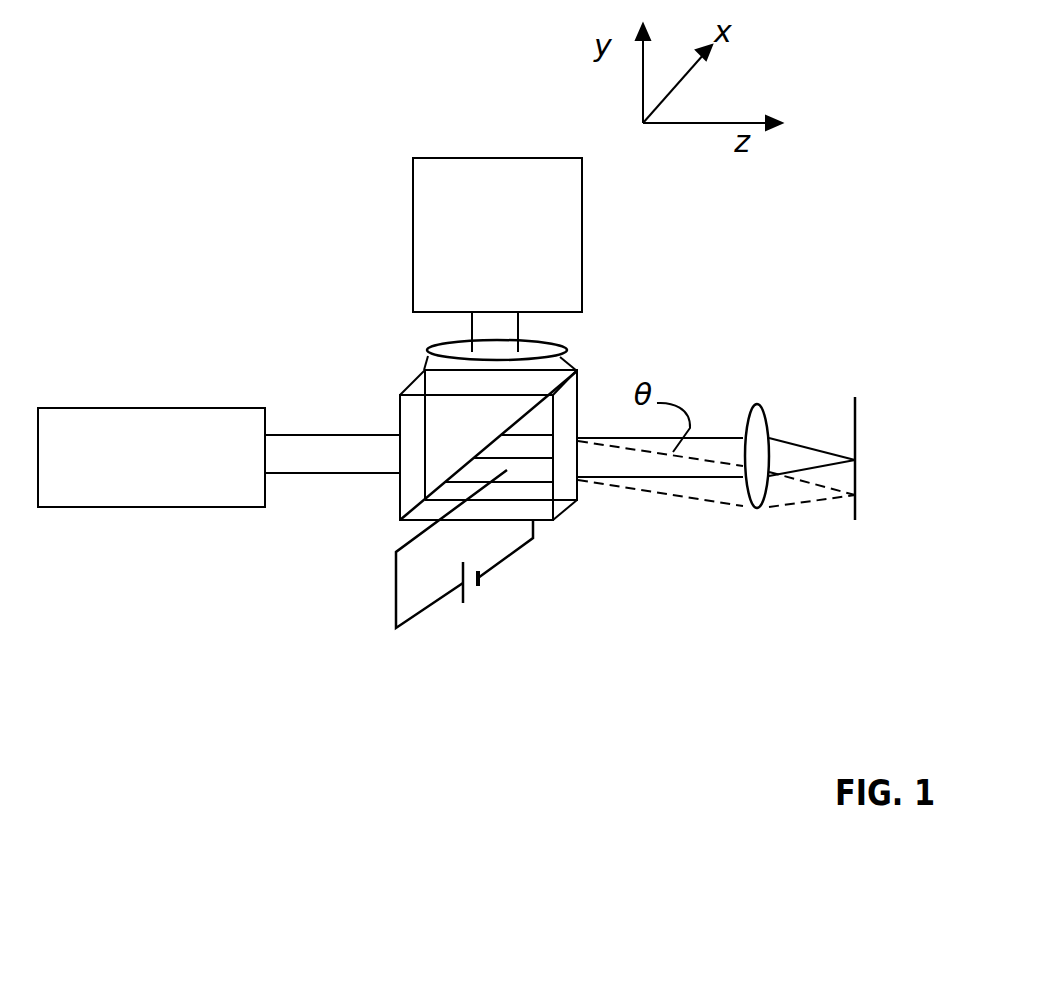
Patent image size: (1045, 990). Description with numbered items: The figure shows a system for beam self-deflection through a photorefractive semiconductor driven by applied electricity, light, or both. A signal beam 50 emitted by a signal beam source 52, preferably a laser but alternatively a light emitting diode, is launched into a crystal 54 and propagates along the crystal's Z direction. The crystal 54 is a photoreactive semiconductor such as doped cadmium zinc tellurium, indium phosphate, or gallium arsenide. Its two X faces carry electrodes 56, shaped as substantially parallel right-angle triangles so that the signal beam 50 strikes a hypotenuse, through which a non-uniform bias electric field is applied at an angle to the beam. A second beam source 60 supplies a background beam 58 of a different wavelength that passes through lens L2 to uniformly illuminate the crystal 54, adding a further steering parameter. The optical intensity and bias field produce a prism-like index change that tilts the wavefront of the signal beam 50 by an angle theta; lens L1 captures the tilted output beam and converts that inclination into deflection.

The signal beam 50 is at (353, 425).
The signal beam source 52 is at (202, 400).
The crystal 54 is at (397, 486).
The electrodes 56 is at (543, 524).
The background beam 58 is at (518, 330).
The second beam source 60 is at (587, 225).
The lens L1 is at (743, 414).
The lens L2 is at (428, 349).